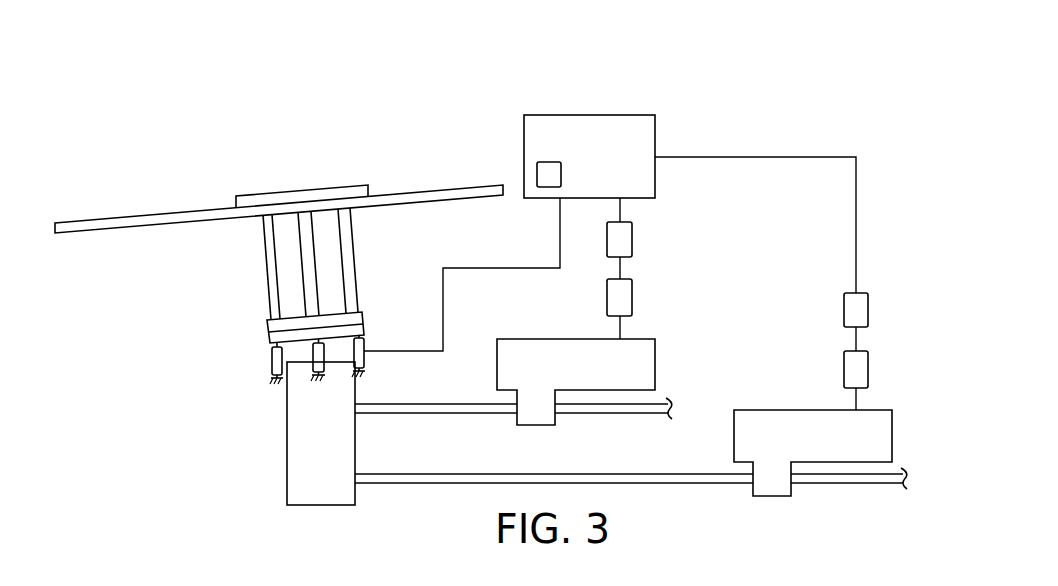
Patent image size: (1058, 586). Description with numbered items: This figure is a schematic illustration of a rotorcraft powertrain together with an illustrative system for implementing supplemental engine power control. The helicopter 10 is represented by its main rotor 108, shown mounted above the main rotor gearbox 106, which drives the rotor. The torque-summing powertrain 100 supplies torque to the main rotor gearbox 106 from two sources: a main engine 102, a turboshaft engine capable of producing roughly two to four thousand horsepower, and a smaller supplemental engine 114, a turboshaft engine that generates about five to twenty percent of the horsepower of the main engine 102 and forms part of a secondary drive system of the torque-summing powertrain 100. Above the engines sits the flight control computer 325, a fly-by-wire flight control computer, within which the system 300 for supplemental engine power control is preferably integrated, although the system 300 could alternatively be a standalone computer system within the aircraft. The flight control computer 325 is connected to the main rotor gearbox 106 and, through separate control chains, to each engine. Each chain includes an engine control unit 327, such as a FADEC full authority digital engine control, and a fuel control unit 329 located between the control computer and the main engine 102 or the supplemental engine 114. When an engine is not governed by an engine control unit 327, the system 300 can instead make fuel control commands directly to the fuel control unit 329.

The helicopter 10 is at (145, 172).
The torque-summing powertrain 100 is at (760, 125).
The main engine 102 is at (558, 339).
The main rotor gearbox 106 is at (287, 446).
The main rotor 108 is at (243, 183).
The supplemental engine 114 is at (797, 410).
The system 300 is at (561, 172).
The flight control computer 325 is at (597, 113).
The engine control unit 327 is at (632, 239).
The fuel control unit 329 is at (632, 298).